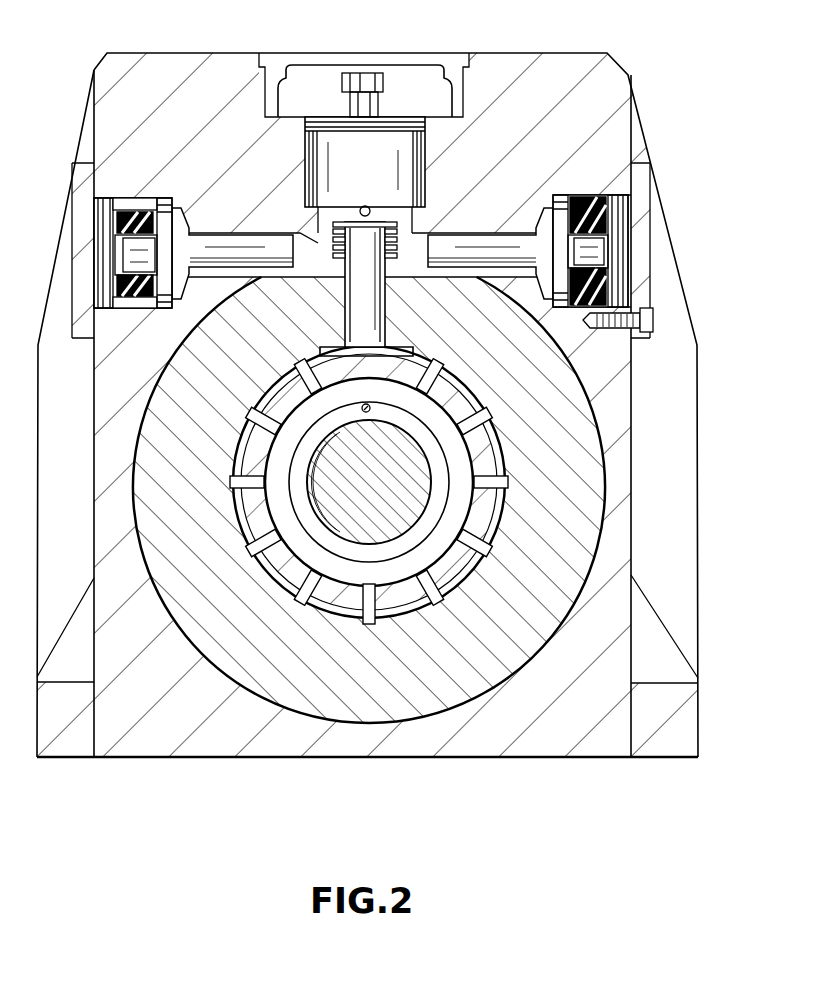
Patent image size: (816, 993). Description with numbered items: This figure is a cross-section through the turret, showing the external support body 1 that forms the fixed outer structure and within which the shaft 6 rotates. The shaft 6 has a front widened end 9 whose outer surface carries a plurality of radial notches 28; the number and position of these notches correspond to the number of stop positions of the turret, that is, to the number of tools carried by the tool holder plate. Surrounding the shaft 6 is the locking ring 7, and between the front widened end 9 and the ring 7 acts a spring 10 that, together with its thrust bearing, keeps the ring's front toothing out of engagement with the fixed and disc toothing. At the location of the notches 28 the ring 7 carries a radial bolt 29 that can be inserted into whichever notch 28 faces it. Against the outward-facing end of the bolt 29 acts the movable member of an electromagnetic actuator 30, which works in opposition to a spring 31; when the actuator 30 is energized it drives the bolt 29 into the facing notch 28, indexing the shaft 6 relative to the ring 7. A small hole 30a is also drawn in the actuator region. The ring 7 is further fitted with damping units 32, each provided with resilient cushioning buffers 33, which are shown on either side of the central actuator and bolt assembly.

The external support body 1 is at (140, 737).
The shaft 6 is at (393, 465).
The locking ring 7 is at (305, 695).
The front widened end 9 is at (267, 583).
The spring 10 is at (423, 513).
The radial notches 28 is at (440, 605).
The radial bolt 29 is at (373, 316).
The electromagnetic actuator 30 is at (402, 178).
The hole 30a is at (363, 208).
The spring 31 is at (336, 240).
The damping units 32 is at (240, 238).
The resilient cushioning buffers 33 is at (130, 212).